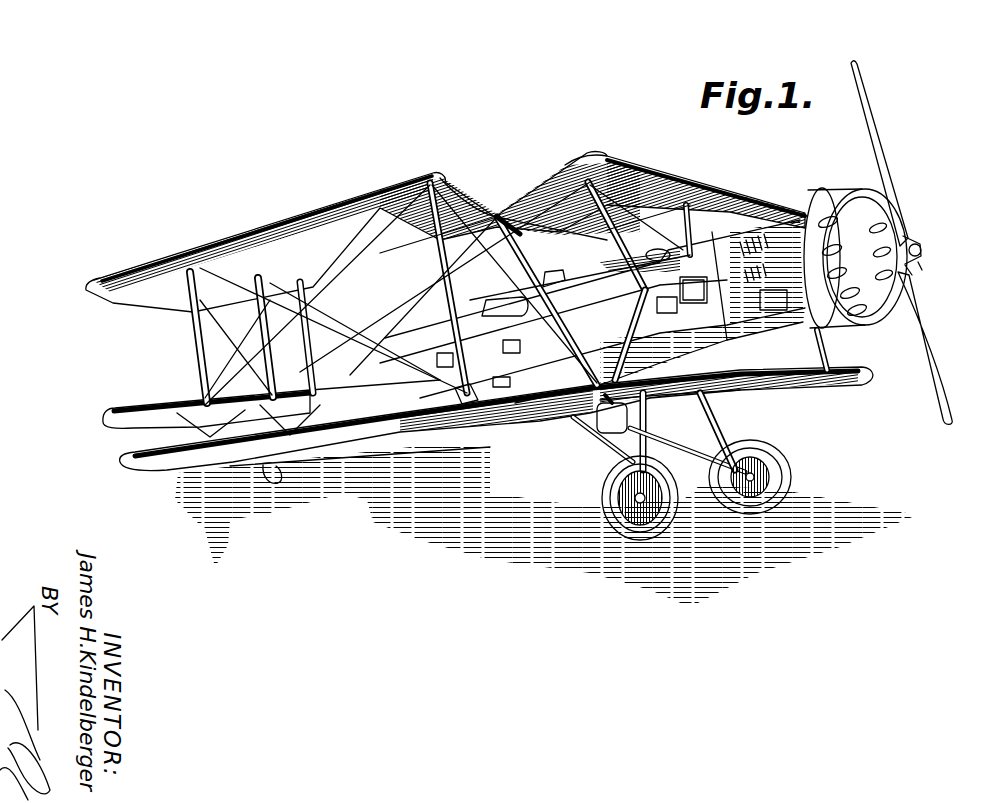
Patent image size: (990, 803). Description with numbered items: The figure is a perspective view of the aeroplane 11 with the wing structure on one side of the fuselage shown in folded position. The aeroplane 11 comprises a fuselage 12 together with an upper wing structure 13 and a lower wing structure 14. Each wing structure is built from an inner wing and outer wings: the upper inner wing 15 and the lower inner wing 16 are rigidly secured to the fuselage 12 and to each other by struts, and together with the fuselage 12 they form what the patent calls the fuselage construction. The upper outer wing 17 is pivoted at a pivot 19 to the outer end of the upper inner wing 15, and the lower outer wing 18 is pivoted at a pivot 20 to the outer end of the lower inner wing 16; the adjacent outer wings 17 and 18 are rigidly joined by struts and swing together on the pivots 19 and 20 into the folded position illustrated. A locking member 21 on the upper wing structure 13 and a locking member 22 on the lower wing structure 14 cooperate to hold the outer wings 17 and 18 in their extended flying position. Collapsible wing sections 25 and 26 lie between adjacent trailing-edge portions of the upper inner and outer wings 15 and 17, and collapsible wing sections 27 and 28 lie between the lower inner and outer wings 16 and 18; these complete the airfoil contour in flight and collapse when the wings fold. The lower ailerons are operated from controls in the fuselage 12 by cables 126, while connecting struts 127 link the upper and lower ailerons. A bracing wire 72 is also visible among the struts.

The aeroplane 11 is at (568, 150).
The fuselage 12 is at (745, 393).
The upper wing structure 13 is at (700, 178).
The lower wing structure 14 is at (493, 440).
The upper inner wing 15 is at (608, 175).
The lower inner wing 16 is at (650, 335).
The upper outer wing 17 is at (330, 199).
The lower outer wing 18 is at (355, 440).
The pivot 19 is at (490, 210).
The pivot 20 is at (565, 425).
The locking member 21 is at (432, 182).
The locking member 22 is at (462, 425).
The collapsible wing section 25 is at (507, 240).
The collapsible wing section 26 is at (572, 250).
The collapsible wing section 27 is at (535, 435).
The collapsible wing section 28 is at (650, 430).
The bracing wire 72 is at (410, 300).
The cables 126 is at (318, 457).
The connecting struts 127 is at (302, 347).